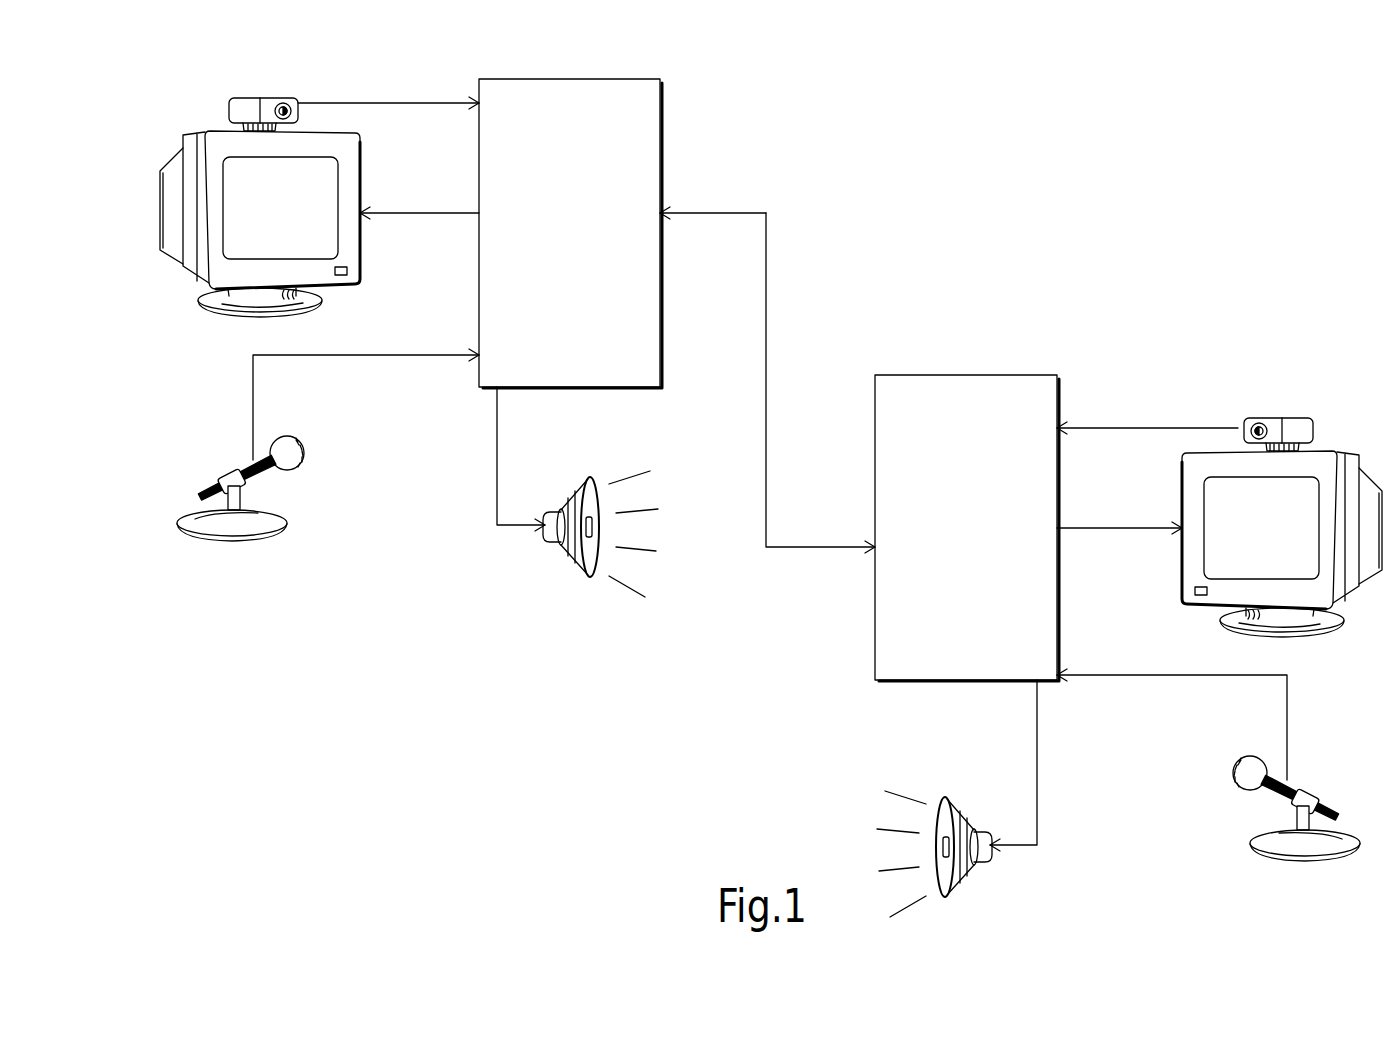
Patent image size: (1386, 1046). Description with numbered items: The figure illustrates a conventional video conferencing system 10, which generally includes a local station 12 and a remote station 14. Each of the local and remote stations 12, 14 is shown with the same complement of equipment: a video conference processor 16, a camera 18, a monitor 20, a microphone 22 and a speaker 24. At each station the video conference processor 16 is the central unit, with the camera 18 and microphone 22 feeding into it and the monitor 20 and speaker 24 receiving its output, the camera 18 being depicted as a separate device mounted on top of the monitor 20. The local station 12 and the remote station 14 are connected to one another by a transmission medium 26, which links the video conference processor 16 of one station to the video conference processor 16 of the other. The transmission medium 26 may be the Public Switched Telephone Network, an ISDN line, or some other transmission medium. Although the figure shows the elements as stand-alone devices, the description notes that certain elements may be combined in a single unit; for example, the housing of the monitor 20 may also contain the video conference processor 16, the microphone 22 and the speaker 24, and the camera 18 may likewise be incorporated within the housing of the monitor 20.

The video conferencing system 10 is at (1133, 212).
The local station 12 is at (738, 106).
The remote station 14 is at (1330, 329).
The video conference processor 16 is at (560, 362).
The camera 18 is at (268, 98).
The monitor 20 is at (208, 303).
The microphone 22 is at (300, 463).
The speaker 24 is at (565, 553).
The transmission medium 26 is at (766, 388).